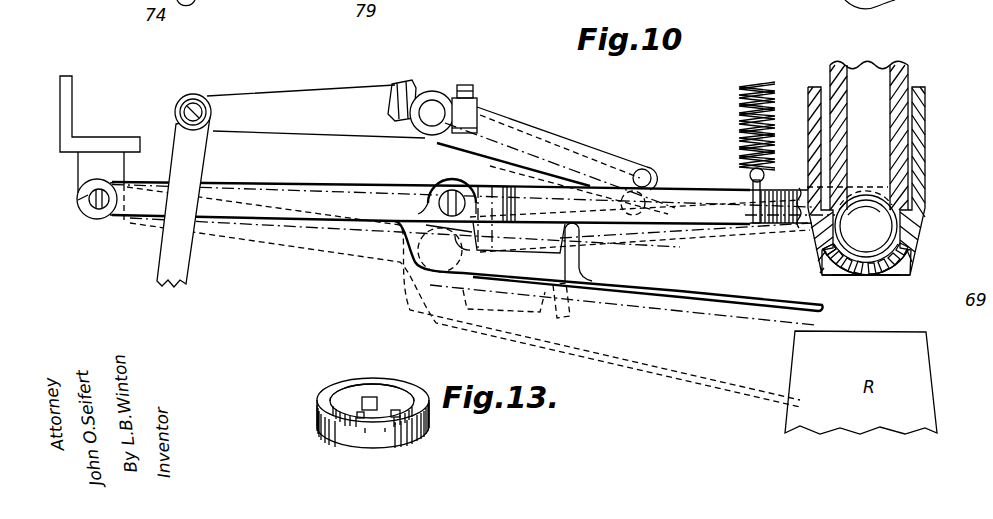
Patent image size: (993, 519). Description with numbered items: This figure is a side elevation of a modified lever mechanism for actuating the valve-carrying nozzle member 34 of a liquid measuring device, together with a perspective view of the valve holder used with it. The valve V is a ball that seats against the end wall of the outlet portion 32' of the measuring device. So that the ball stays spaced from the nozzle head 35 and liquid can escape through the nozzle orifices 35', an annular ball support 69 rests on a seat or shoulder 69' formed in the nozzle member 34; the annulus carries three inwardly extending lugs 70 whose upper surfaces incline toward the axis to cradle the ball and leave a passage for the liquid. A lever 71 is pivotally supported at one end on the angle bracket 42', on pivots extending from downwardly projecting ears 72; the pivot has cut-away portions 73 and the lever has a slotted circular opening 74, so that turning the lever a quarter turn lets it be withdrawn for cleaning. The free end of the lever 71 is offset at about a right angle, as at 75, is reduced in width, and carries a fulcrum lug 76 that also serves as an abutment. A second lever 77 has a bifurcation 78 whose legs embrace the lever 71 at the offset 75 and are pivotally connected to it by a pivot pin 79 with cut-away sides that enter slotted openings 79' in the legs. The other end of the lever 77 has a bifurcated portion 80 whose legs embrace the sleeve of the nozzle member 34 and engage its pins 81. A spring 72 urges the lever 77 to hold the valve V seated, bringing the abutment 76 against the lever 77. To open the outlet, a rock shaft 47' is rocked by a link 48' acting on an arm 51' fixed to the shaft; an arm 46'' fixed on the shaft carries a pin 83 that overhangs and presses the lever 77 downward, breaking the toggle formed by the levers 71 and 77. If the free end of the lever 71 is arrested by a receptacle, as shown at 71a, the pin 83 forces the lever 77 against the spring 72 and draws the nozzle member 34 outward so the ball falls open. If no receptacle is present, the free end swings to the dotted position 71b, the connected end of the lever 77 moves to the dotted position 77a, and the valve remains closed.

In FIG. 10, the angle bracket 42' is at (100, 148).
In FIG. 10, the ears / spring 72 is at (90, 165).
In FIG. 10, the slot in the lever opening 74 is at (87, 208).
In FIG. 10, the cut-away portions of the pivot 73 is at (101, 218).
In FIG. 10, the lever 71 is at (320, 183).
In FIG. 10, the arrested position of lever free end 71a is at (732, 322).
In FIG. 10, the dotted line position of lever free end 71b is at (672, 380).
In FIG. 10, the right angle offset 75 is at (403, 240).
In FIG. 10, the link 48' is at (200, 190).
In FIG. 10, the arm 51' is at (316, 102).
In FIG. 10, the rock shaft 47' is at (432, 98).
In FIG. 10, the arm 46'' is at (556, 161).
In FIG. 10, the pin 83 is at (643, 172).
In FIG. 10, the slot in bifurcation legs 79' is at (428, 185).
In FIG. 10, the bifurcation 78 is at (452, 180).
In FIG. 10, the pivot pin 79 is at (445, 269).
In FIG. 10, the fulcrum lug / abutment 76 is at (580, 238).
In FIG. 10, the second lever 77 is at (690, 188).
In FIG. 10, the dotted line position of lever 77 end 77a is at (685, 248).
In FIG. 10, the bifurcated portion 80 is at (789, 190).
In FIG. 10, the nozzle member 34 is at (925, 134).
In FIG. 10, the outlet portion of the measuring device 32' is at (891, 135).
In FIG. 10, the pins 81 is at (900, 197).
In FIG. 10, the valve V is at (918, 212).
In FIG. 10, the seat or shoulder 69' is at (894, 251).
In FIG. 10, the ball support 69 is at (834, 262).
In FIG. 13, the ball support 69 is at (384, 414).
In FIG. 10, the lugs 70 is at (827, 248).
In FIG. 13, the lugs 70 is at (376, 395).
In FIG. 10, the nozzle head 35 is at (886, 264).
In FIG. 10, the nozzle orifices 35' is at (866, 295).